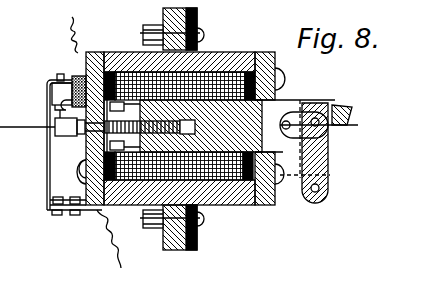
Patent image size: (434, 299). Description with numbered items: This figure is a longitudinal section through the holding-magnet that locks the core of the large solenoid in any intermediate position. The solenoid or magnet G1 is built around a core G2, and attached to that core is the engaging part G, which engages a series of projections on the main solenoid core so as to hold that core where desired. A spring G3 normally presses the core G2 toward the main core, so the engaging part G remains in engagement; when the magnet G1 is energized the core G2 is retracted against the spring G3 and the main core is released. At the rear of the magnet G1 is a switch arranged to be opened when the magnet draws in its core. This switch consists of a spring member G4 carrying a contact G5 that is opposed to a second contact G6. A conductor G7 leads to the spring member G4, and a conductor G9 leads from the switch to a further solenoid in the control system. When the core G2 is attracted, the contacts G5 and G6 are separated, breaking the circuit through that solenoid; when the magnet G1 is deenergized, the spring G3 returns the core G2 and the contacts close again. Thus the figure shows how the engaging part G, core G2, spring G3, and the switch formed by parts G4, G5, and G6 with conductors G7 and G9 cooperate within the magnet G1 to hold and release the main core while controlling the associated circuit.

The engaging part G is at (336, 104).
The solenoid or magnet G1 is at (187, 154).
The core G2 is at (228, 138).
The spring G3 is at (153, 140).
The spring member G4 is at (48, 156).
The contact G5 is at (55, 88).
The contact G6 is at (78, 78).
The conductor G7 is at (121, 266).
The conductor G9 is at (72, 17).